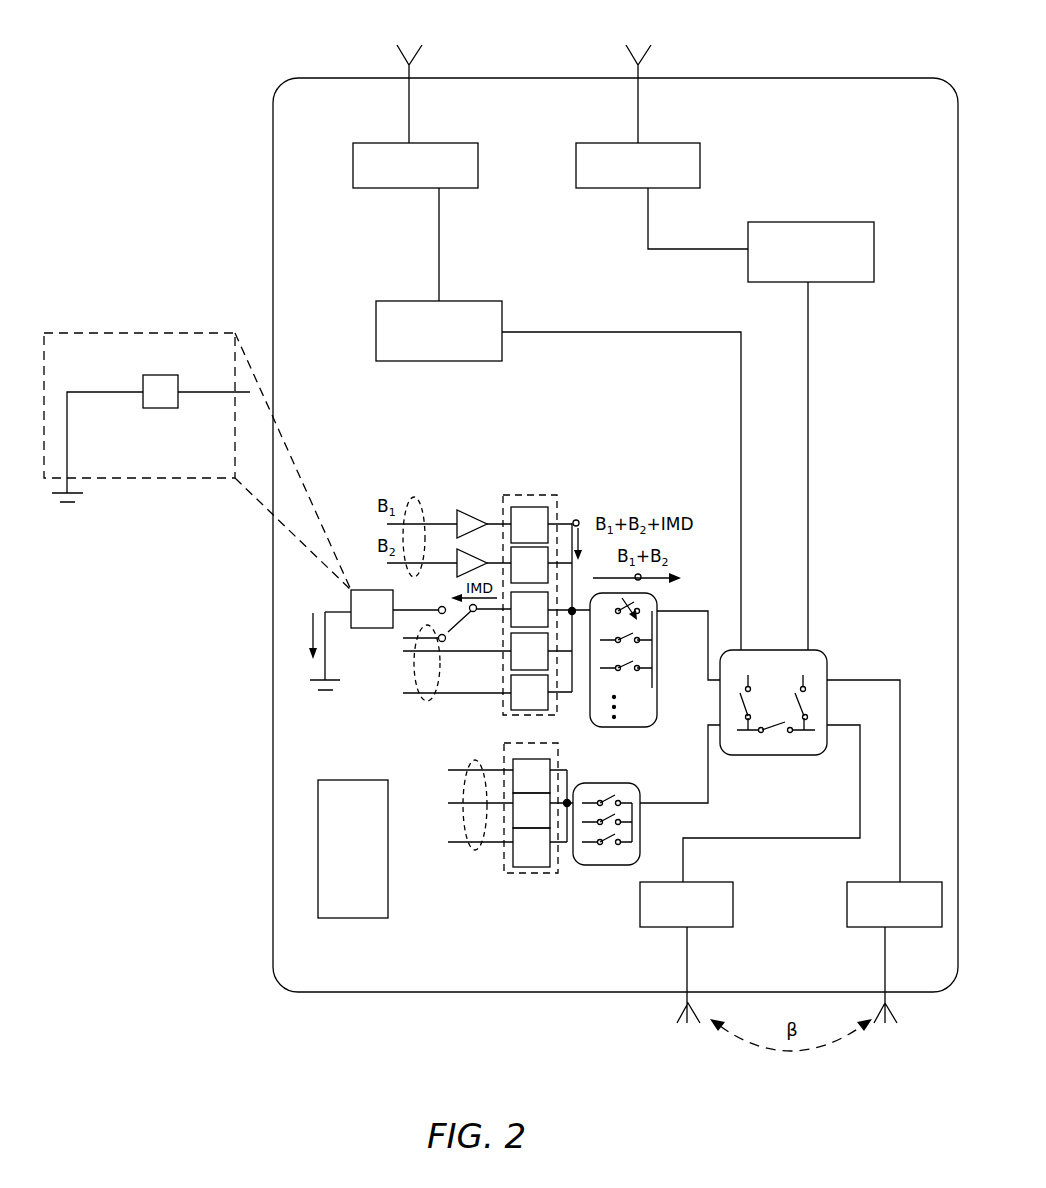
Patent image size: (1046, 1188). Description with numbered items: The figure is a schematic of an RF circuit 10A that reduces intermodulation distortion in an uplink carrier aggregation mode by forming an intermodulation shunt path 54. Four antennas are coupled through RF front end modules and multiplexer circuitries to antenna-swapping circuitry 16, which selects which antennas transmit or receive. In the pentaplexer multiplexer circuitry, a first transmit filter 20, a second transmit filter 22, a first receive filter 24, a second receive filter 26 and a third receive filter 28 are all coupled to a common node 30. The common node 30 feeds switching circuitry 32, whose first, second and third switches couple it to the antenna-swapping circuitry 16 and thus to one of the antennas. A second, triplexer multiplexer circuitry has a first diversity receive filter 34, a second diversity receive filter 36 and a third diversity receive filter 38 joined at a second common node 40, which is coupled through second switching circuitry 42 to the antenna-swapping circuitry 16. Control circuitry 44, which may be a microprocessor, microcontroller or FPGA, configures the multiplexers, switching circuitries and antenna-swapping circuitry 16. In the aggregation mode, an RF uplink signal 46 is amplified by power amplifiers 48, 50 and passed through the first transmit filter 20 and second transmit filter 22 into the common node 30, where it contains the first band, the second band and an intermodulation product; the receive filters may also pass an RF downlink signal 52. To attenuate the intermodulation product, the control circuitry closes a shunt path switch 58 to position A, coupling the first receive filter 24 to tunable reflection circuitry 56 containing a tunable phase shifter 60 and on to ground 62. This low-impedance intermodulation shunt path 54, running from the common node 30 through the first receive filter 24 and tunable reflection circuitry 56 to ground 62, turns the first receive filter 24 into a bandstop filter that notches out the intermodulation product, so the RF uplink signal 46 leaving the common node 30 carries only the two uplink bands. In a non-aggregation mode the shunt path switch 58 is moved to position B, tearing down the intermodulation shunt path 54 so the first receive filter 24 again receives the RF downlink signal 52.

The RF circuit 10A is at (886, 127).
The antenna-swapping circuitry 16 is at (827, 652).
The first transmit filter 20 is at (520, 536).
The second transmit filter 22 is at (520, 576).
The first receive filter 24 is at (520, 620).
The second receive filter 26 is at (520, 662).
The third receive filter 28 is at (520, 703).
The common node 30 is at (573, 608).
The switching circuitry 32 is at (654, 724).
The first diversity receive filter 34 is at (522, 787).
The second diversity receive filter 36 is at (522, 821).
The third diversity receive filter 38 is at (522, 858).
The second common node 40 is at (568, 799).
The second switching circuitry 42 is at (625, 783).
The control circuitry 44 is at (343, 856).
The RF uplink signal 46 is at (414, 500).
The power amplifier 48 is at (465, 510).
The power amplifier 50 is at (459, 568).
The RF downlink signal 52 is at (432, 697).
The IMD shunt path 54 is at (310, 629).
The tunable reflection circuitry 56 is at (362, 620).
The shunt path switch 58 is at (475, 614).
The tunable phase shifter 60 is at (158, 408).
The ground 62 is at (68, 512).